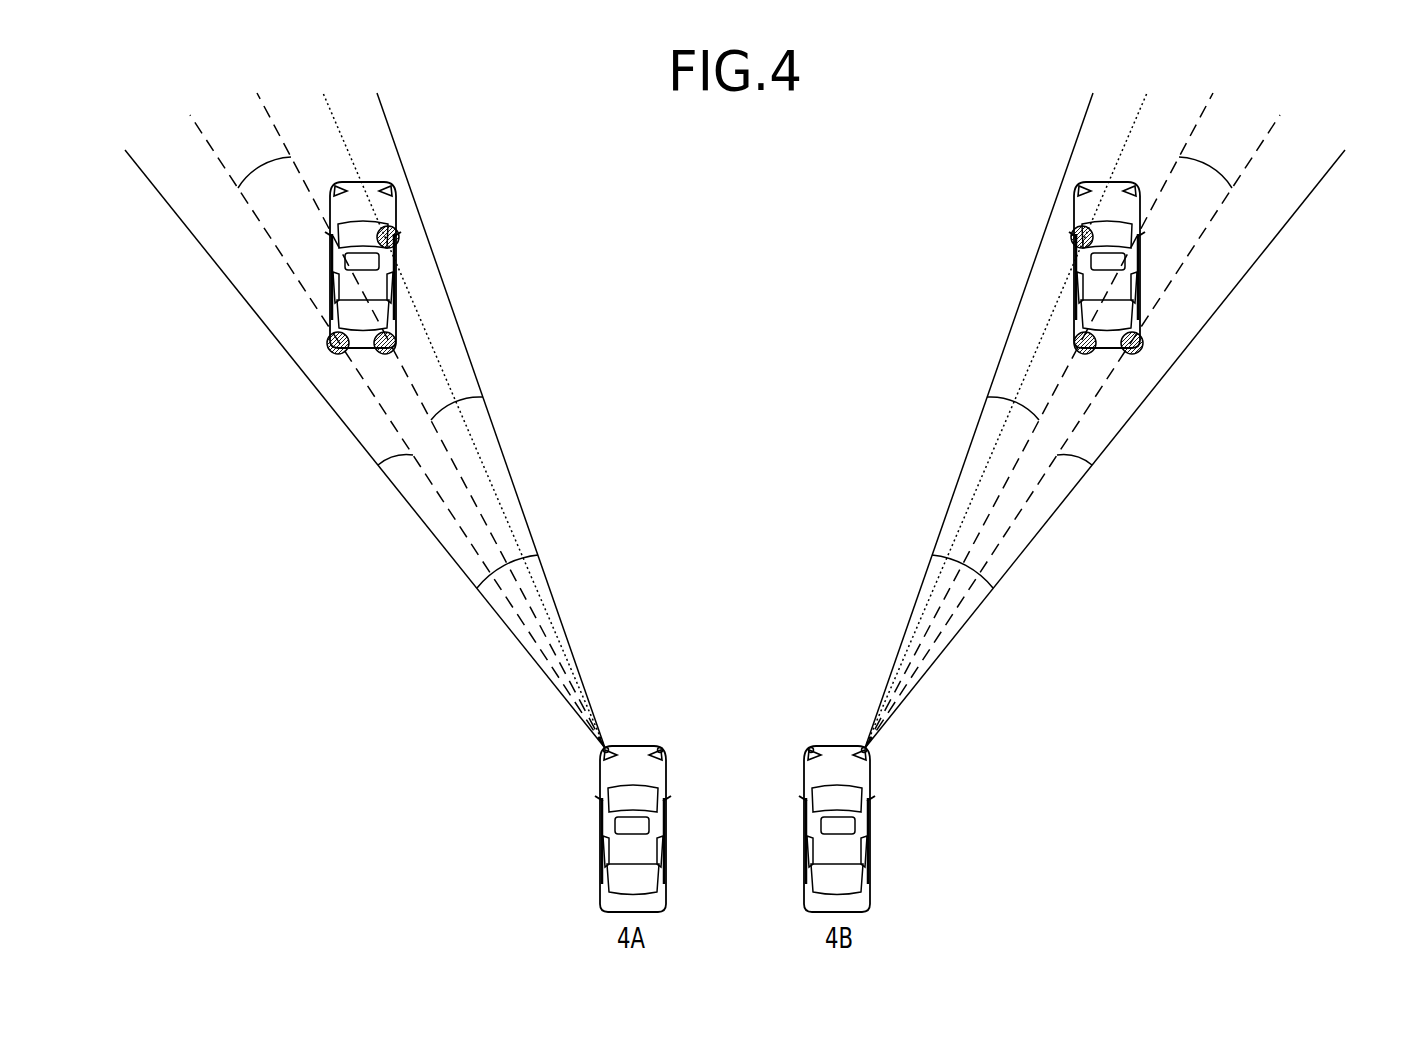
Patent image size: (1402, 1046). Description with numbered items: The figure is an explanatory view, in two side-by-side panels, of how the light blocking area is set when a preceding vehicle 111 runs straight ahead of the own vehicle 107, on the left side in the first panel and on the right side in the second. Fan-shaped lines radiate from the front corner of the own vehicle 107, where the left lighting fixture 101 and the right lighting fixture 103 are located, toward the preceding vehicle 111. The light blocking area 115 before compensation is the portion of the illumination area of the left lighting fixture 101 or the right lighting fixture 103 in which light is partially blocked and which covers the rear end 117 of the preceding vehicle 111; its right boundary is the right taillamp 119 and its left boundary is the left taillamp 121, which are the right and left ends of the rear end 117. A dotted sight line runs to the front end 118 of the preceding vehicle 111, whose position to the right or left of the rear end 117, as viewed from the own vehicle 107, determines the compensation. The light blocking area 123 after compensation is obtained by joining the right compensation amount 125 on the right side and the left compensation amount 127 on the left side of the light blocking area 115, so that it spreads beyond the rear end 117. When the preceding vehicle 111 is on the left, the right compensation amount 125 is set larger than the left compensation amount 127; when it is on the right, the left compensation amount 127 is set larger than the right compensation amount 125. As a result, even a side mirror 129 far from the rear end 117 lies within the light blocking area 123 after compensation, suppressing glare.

The left lighting fixture 101 is at (710, 692).
The right lighting fixture 103 is at (763, 692).
The own vehicle 107 is at (734, 829).
The preceding vehicle 111 is at (735, 247).
The light blocking area before compensation 115 is at (736, 128).
The rear end 117 is at (736, 403).
The front end 118 is at (735, 408).
The right taillamp 119 is at (807, 355).
The left taillamp 121 is at (661, 353).
The light blocking area after compensation 123 is at (735, 536).
The right compensation amount 125 is at (807, 438).
The left compensation amount 127 is at (663, 436).
The side mirror 129 is at (735, 219).